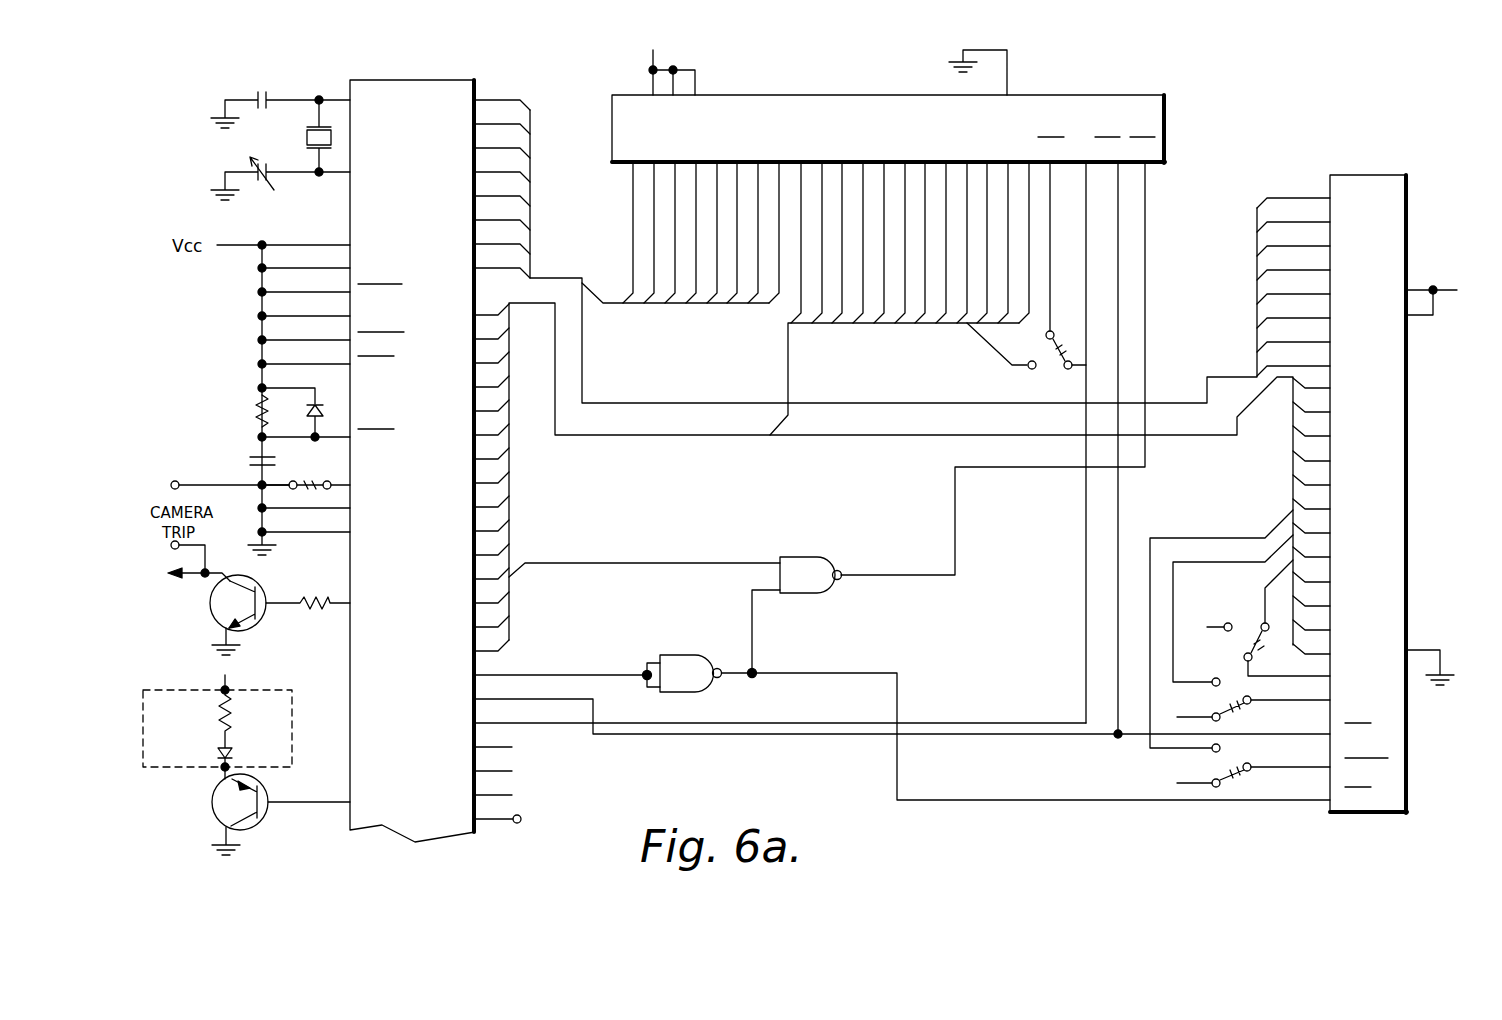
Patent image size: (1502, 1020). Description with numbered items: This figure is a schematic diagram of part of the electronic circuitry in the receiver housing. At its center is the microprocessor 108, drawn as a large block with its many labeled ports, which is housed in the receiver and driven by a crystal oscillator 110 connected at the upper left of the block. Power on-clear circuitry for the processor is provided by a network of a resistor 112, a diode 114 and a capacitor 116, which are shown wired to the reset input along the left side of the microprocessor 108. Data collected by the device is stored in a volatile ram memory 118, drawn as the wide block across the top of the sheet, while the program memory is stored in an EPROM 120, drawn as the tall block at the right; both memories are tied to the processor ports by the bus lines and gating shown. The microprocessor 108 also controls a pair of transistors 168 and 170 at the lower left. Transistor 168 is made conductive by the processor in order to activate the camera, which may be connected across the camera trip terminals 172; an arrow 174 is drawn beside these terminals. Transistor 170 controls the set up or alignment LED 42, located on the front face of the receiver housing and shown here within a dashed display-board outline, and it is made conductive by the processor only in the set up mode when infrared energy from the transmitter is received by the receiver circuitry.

The microprocessor 108 is at (390, 97).
The crystal oscillator 110 is at (308, 133).
The resistor 112 is at (258, 403).
The diode 114 is at (323, 413).
The capacitor 116 is at (258, 456).
The volatile ram memory 118 is at (1090, 95).
The EPROM 120 is at (1355, 175).
The transistor 168 is at (258, 632).
The transistor 170 is at (254, 830).
The camera trip terminals 172 is at (177, 481).
The trip arrow 174 is at (184, 578).
The set up or alignment LED 42 is at (216, 753).